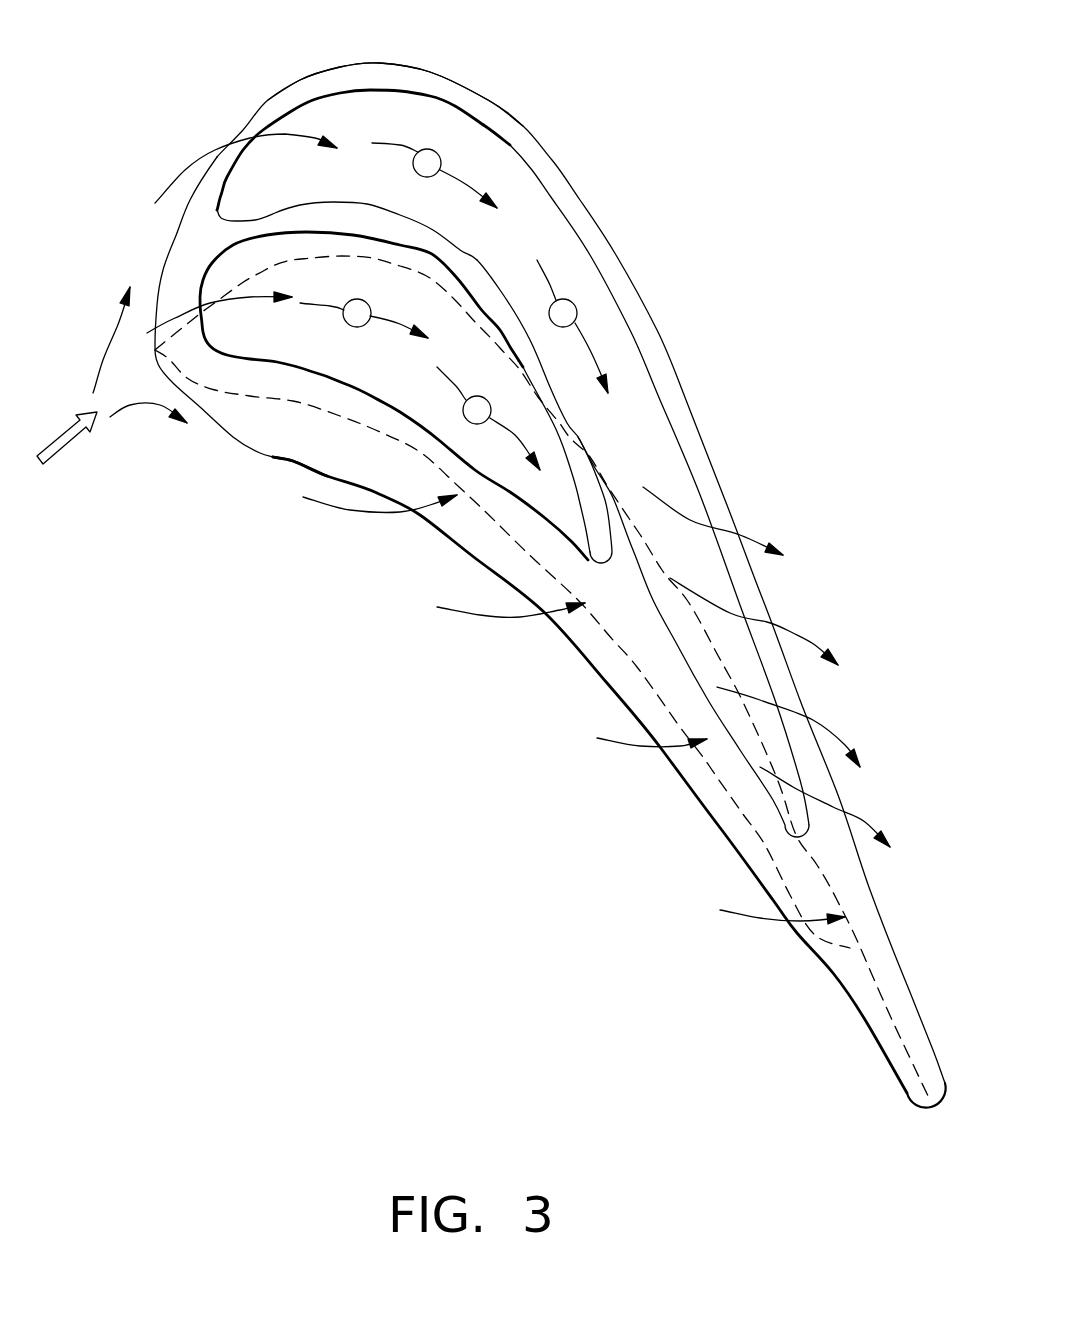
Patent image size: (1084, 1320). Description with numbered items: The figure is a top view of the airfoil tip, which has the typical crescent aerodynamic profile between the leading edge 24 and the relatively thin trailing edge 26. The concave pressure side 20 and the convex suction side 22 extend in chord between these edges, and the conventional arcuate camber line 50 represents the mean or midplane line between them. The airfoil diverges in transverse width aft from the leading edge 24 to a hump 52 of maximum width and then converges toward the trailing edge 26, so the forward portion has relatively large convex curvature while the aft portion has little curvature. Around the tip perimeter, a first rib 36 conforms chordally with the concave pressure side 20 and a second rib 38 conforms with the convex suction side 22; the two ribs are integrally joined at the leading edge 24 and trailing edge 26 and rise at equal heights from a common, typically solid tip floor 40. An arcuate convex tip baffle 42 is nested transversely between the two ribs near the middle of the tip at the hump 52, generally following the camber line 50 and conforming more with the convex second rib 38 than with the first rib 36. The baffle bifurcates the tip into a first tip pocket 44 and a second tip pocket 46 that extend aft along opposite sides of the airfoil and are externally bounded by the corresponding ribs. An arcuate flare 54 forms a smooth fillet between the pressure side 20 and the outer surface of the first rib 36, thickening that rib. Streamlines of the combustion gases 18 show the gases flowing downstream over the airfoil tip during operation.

The combustion gases 18 is at (62, 462).
The pressure side 20 is at (594, 666).
The suction side 22 is at (662, 343).
The leading edge 24 is at (156, 357).
The trailing edge 26 is at (932, 1112).
The first rib 36 is at (483, 530).
The second rib 38 is at (596, 262).
The tip floor 40 is at (317, 117).
The tip baffle 42 is at (477, 260).
The first tip pocket 44 is at (384, 366).
The second tip pocket 46 is at (646, 439).
The camber line 50 is at (268, 276).
The hump 52 is at (382, 63).
The arcuate flare 54 is at (275, 460).